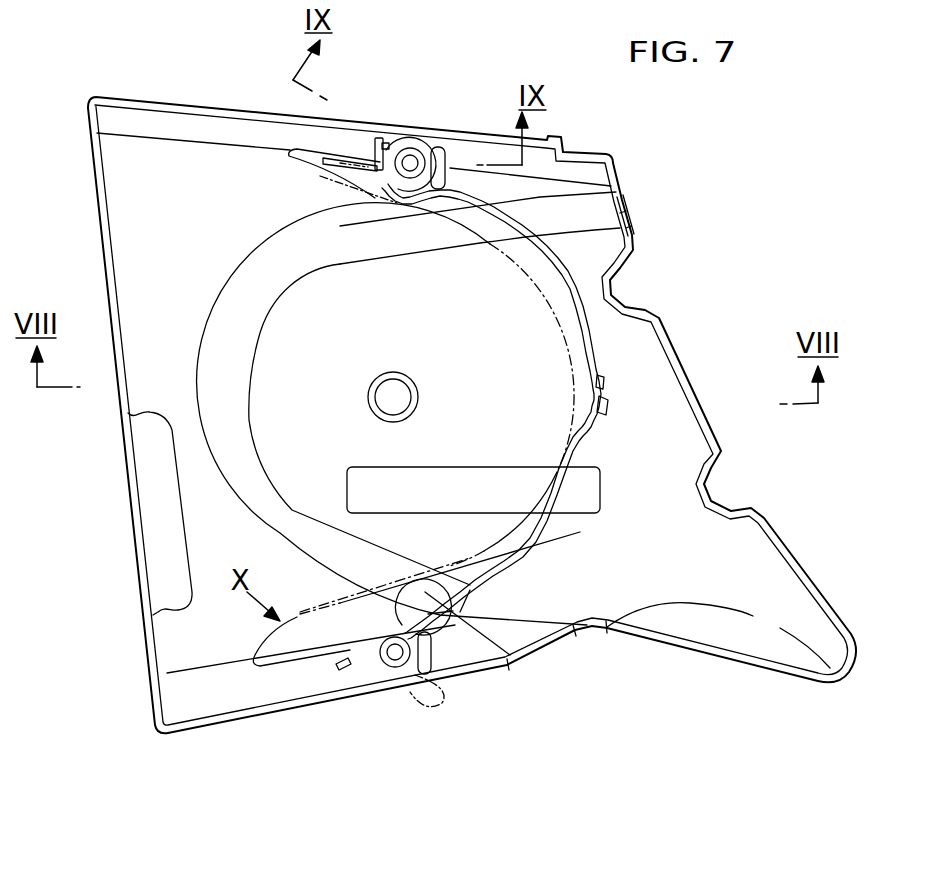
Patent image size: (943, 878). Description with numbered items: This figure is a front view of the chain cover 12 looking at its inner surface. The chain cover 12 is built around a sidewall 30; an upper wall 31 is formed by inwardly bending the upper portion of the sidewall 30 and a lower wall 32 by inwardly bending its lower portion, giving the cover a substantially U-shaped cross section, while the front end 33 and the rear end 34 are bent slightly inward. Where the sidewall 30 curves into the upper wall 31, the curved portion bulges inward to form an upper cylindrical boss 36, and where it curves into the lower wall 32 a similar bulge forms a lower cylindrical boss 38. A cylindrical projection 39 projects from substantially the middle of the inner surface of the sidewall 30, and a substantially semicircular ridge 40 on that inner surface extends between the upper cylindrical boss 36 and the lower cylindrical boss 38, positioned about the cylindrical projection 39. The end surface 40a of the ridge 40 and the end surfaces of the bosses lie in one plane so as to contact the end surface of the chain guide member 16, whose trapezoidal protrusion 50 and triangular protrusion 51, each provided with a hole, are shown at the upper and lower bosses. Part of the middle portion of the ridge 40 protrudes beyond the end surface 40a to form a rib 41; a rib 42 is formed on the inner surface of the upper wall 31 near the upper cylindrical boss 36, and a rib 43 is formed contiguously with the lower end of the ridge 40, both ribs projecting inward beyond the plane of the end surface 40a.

The chain cover 12 is at (347, 90).
The chain guide member 16 is at (528, 288).
The sidewall 30 is at (120, 242).
The upper wall 31 is at (187, 103).
The lower wall 32 is at (553, 648).
The front end 33 is at (727, 453).
The rear end 34 is at (127, 487).
The upper cylindrical boss 36 is at (427, 147).
The lower cylindrical boss 38 is at (397, 673).
The cylindrical projection 39 is at (413, 380).
The substantially semicircular ridge 40 is at (530, 552).
The end surface of the ridge 40a is at (596, 379).
The rib 41 is at (610, 404).
The rib 42 is at (376, 138).
The rib 43 is at (345, 670).
The trapezoidal protrusion 50 is at (410, 148).
The triangular protrusion 51 is at (433, 710).